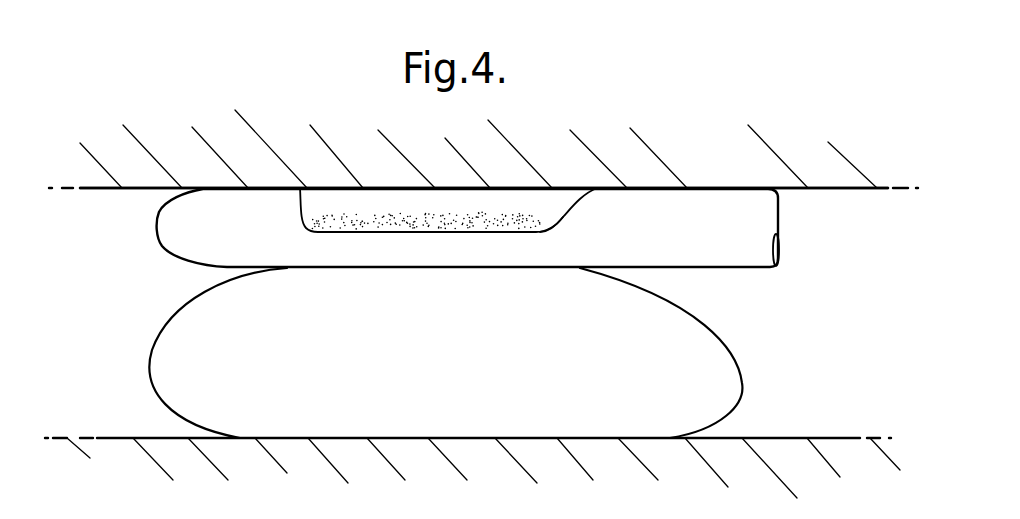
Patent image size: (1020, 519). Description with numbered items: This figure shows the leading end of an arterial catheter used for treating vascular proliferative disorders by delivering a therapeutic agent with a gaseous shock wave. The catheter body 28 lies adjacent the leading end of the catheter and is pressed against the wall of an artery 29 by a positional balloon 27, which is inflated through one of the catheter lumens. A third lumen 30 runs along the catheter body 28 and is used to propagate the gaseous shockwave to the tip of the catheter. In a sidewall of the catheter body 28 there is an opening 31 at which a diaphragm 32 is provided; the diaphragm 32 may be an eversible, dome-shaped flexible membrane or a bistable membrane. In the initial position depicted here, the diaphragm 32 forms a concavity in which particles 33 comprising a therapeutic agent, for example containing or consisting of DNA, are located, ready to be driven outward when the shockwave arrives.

The positional balloon 27 is at (340, 413).
The body 28 is at (753, 188).
The artery 29 is at (123, 223).
The third lumen 30 is at (688, 215).
The opening 31 is at (537, 200).
The diaphragm 32 is at (558, 217).
The particles 33 is at (370, 210).